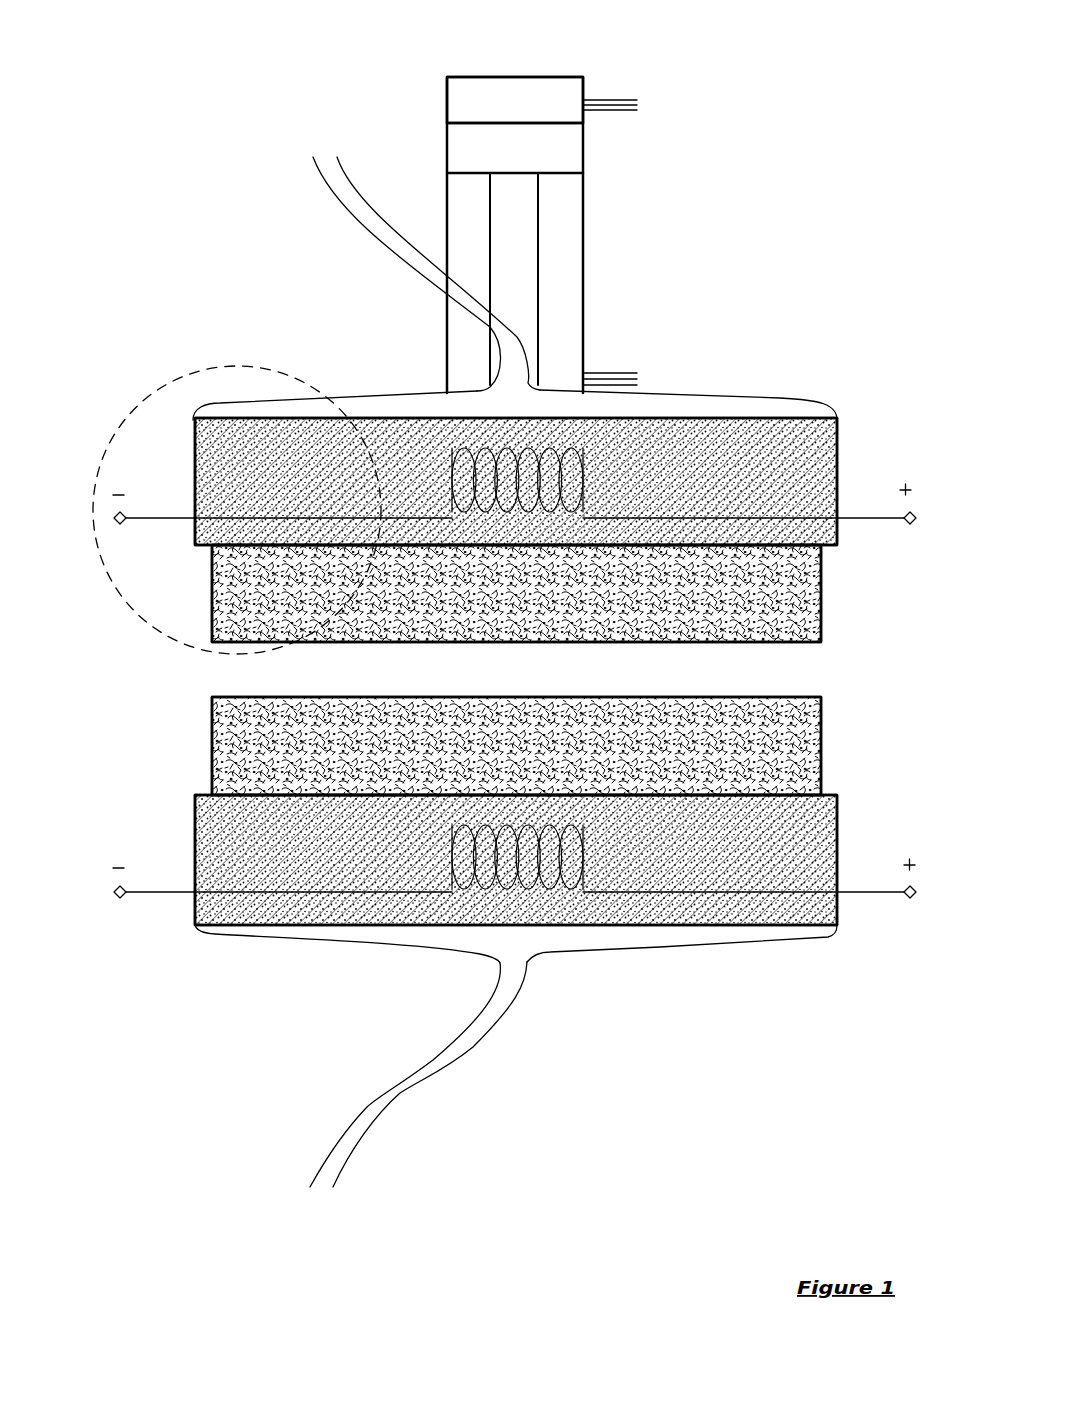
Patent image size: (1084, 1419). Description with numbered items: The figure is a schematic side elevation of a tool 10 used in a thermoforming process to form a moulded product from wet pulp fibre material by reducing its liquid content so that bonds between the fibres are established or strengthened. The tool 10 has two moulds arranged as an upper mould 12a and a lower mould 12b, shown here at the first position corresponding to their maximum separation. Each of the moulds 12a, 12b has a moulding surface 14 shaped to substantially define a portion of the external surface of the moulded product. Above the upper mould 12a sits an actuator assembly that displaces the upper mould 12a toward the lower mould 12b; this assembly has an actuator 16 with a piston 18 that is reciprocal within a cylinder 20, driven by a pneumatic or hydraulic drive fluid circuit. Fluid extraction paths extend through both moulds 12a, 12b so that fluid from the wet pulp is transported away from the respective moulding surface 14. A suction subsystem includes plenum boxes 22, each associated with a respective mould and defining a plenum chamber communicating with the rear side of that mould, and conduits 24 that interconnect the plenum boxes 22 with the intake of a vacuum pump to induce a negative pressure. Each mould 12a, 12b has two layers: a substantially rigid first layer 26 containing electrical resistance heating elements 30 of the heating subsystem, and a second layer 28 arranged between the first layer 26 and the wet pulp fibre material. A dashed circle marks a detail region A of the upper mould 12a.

The tool 10 is at (705, 990).
The upper mould 12a is at (852, 453).
The lower mould 12b is at (173, 808).
The moulding surface 14 is at (798, 647).
The actuator 16 is at (427, 112).
The piston 18 is at (541, 265).
The cylinder 20 is at (572, 77).
The plenum box 22 is at (392, 397).
The conduit 24 is at (312, 184).
The first layer 26 is at (233, 420).
The second layer 28 is at (797, 603).
The electrical resistance heating element 30 is at (697, 518).
The detail region A is at (143, 402).